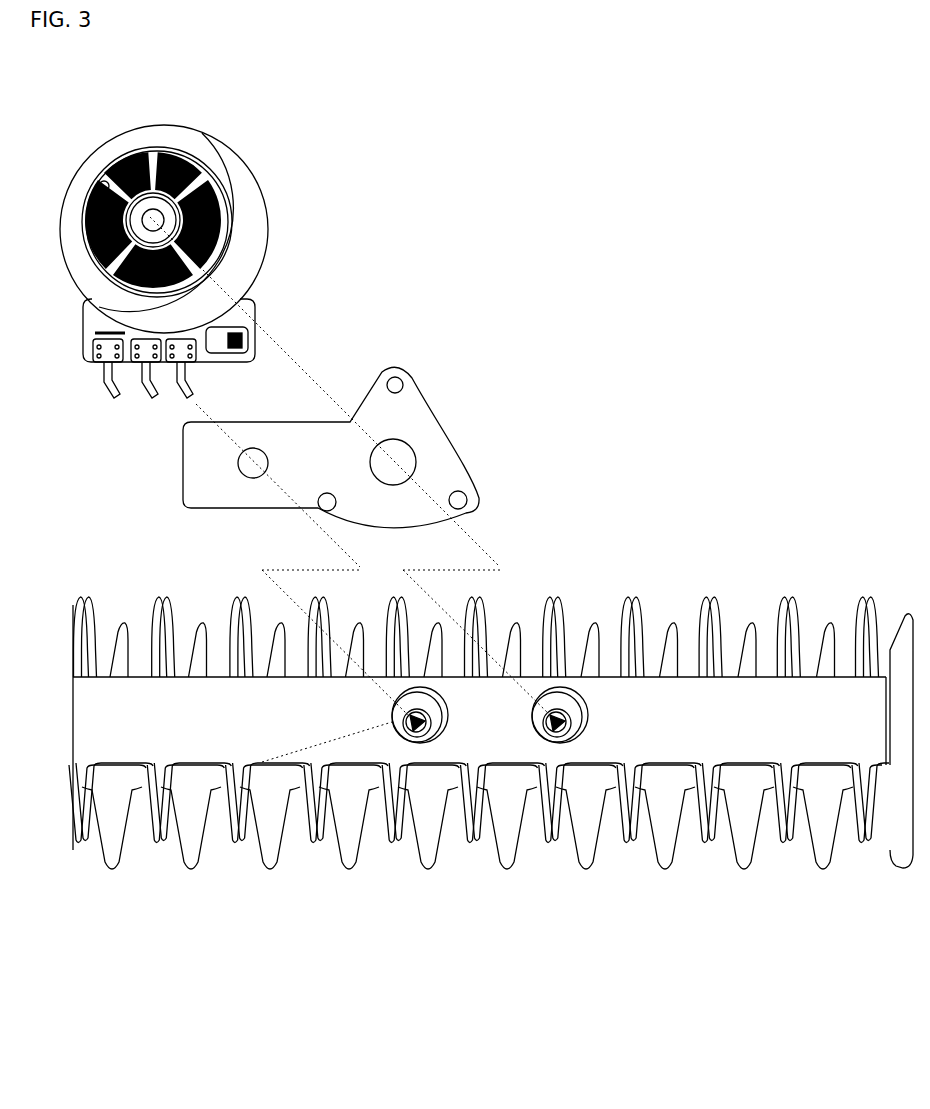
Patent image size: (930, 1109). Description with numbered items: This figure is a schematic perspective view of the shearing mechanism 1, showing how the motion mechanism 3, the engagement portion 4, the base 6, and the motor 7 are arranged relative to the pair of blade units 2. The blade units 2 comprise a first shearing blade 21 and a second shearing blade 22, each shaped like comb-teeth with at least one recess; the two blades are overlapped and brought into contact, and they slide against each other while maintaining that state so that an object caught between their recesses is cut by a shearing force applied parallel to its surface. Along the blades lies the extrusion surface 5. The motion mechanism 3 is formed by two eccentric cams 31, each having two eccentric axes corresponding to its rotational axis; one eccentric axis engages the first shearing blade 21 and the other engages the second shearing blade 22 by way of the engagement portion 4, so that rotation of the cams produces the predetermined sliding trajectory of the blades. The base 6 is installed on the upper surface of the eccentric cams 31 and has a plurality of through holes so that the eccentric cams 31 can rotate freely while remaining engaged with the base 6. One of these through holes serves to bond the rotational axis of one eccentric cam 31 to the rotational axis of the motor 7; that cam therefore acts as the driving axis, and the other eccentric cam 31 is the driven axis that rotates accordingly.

The shearing mechanism 1 is at (798, 82).
The blade units 2 is at (484, 738).
The first shearing blade 21 is at (84, 588).
The second shearing blade 22 is at (118, 896).
The motion mechanism 3 is at (524, 818).
The eccentric cam 31 is at (437, 722).
The engagement portion 4 is at (394, 715).
The extrusion surface 5 is at (628, 600).
The base 6 is at (392, 403).
The motor 7 is at (192, 121).